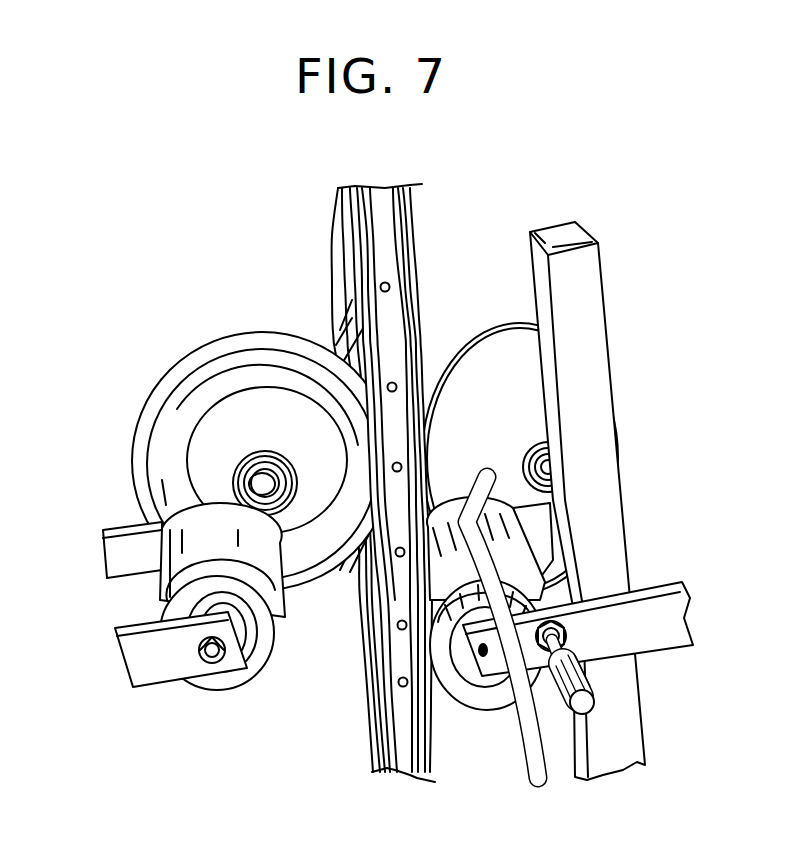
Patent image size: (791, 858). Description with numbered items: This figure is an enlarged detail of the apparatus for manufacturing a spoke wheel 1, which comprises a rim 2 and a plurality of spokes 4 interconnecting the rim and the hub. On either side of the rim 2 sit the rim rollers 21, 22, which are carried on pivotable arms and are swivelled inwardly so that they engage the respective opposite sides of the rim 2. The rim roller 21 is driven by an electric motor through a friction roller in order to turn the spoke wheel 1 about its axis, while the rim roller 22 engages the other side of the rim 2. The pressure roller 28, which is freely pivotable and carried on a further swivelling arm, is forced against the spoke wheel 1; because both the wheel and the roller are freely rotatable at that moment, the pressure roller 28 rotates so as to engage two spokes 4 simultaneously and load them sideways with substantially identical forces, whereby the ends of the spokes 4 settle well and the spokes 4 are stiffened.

The spoke wheel 1 is at (245, 475).
The rim 2 is at (352, 244).
The spokes 4 is at (346, 292).
The rim roller 21 is at (268, 675).
The rim roller 22 is at (477, 710).
The pressure roller 28 is at (132, 476).